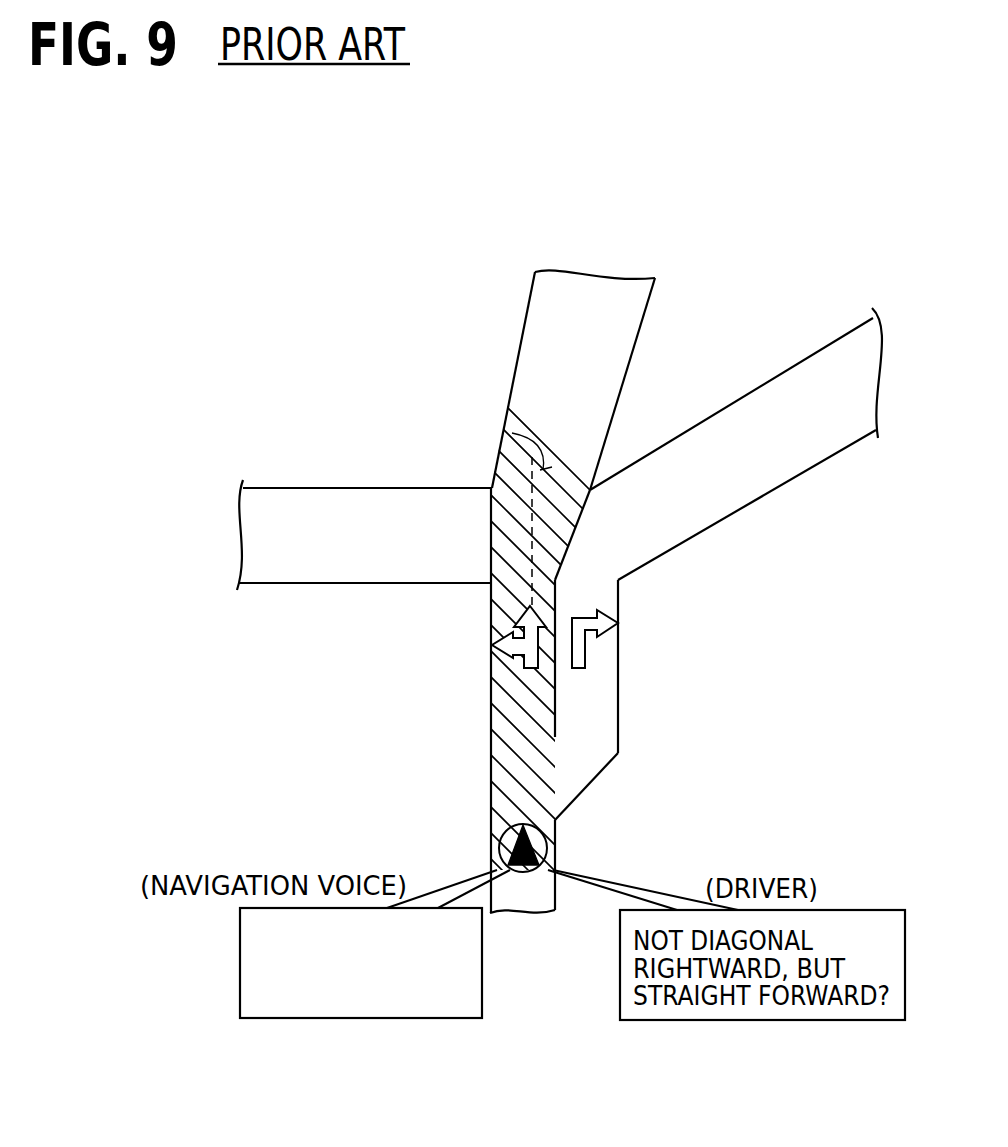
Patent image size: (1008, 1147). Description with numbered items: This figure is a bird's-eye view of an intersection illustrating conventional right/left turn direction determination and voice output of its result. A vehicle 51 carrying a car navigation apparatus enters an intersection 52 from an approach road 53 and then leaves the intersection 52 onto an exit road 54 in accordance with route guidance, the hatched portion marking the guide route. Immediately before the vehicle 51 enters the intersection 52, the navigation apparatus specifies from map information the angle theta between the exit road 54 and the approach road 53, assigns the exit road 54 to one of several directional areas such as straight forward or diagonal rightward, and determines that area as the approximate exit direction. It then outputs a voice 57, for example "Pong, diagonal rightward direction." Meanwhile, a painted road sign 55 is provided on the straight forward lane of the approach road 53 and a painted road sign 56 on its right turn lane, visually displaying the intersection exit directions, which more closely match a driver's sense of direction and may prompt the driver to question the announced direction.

The vehicle 51 is at (505, 832).
The intersection 52 is at (593, 528).
The approach road 53 is at (507, 710).
The exit road 54 is at (542, 345).
The painted road sign 55 is at (537, 668).
The painted road sign 56 is at (585, 657).
The voice 57 is at (240, 955).